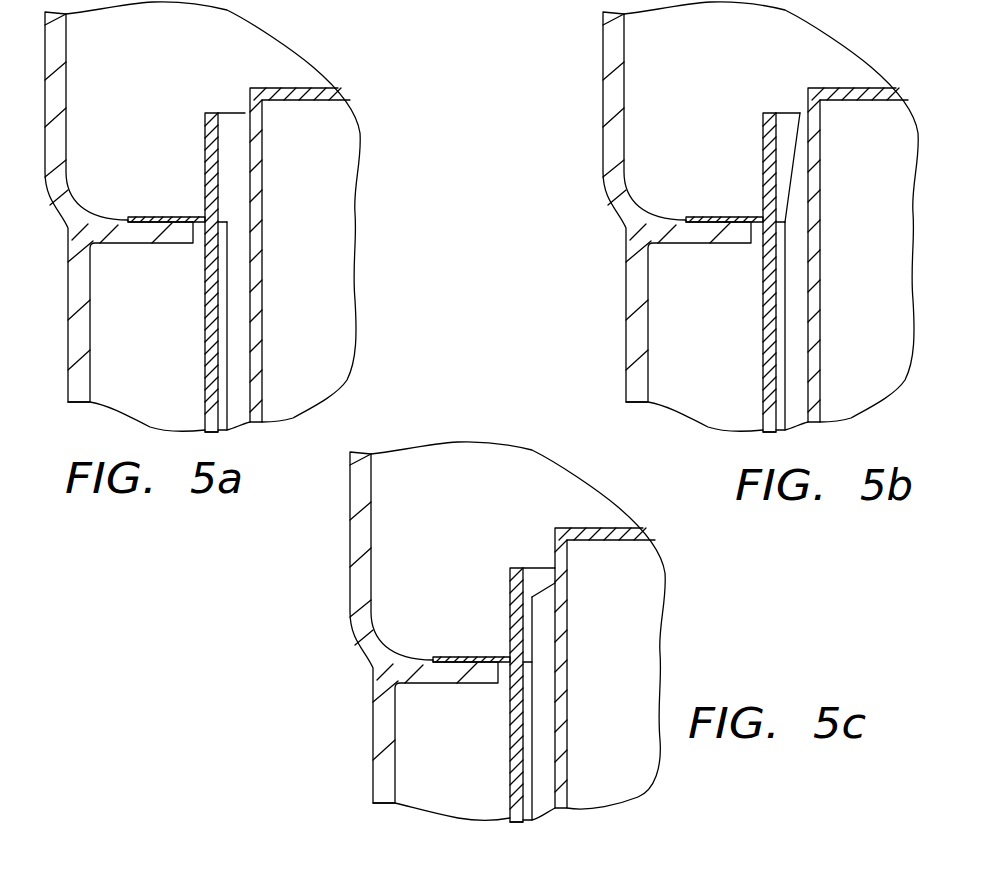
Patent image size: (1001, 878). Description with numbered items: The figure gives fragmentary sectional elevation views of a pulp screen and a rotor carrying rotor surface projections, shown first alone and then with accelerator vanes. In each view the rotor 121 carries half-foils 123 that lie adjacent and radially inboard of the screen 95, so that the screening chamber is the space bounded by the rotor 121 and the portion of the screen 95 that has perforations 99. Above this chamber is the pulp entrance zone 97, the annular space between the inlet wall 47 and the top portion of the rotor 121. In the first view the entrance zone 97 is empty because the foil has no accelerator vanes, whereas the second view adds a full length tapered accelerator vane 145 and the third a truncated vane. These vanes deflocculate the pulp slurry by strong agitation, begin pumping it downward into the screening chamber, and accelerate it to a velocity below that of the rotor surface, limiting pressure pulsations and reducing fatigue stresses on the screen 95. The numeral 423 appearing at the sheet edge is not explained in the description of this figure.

In FIG. 5a, the inlet wall 47 is at (205, 144).
In FIG. 5b, the inlet wall 47 is at (763, 144).
In FIG. 5c, the inlet wall 47 is at (510, 583).
In FIG. 5a, the screen 95 is at (205, 272).
In FIG. 5b, the screen 95 is at (763, 272).
In FIG. 5c, the screen 95 is at (510, 710).
In FIG. 5a, the pulp entrance zone 97 is at (233, 125).
In FIG. 5b, the pulp entrance zone 97 is at (791, 125).
In FIG. 5c, the pulp entrance zone 97 is at (538, 577).
In FIG. 5a, the perforations 99 is at (213, 347).
In FIG. 5b, the perforations 99 is at (771, 347).
In FIG. 5c, the perforations 99 is at (518, 785).
In FIG. 5a, the rotor 121 is at (258, 215).
In FIG. 5b, the rotor 121 is at (816, 215).
In FIG. 5c, the rotor 121 is at (563, 655).
In FIG. 5a, the half-foils 123 is at (242, 318).
In FIG. 5b, the half-foils 123 is at (800, 318).
In FIG. 5c, the half-foils 123 is at (547, 755).
In FIG. 5b, the full length tapered accelerator vane 145 is at (802, 158).
In FIG. 5c, the full length tapered accelerator vane 145 is at (545, 603).
In FIG. 5c, the lead 423 is at (157, 877).